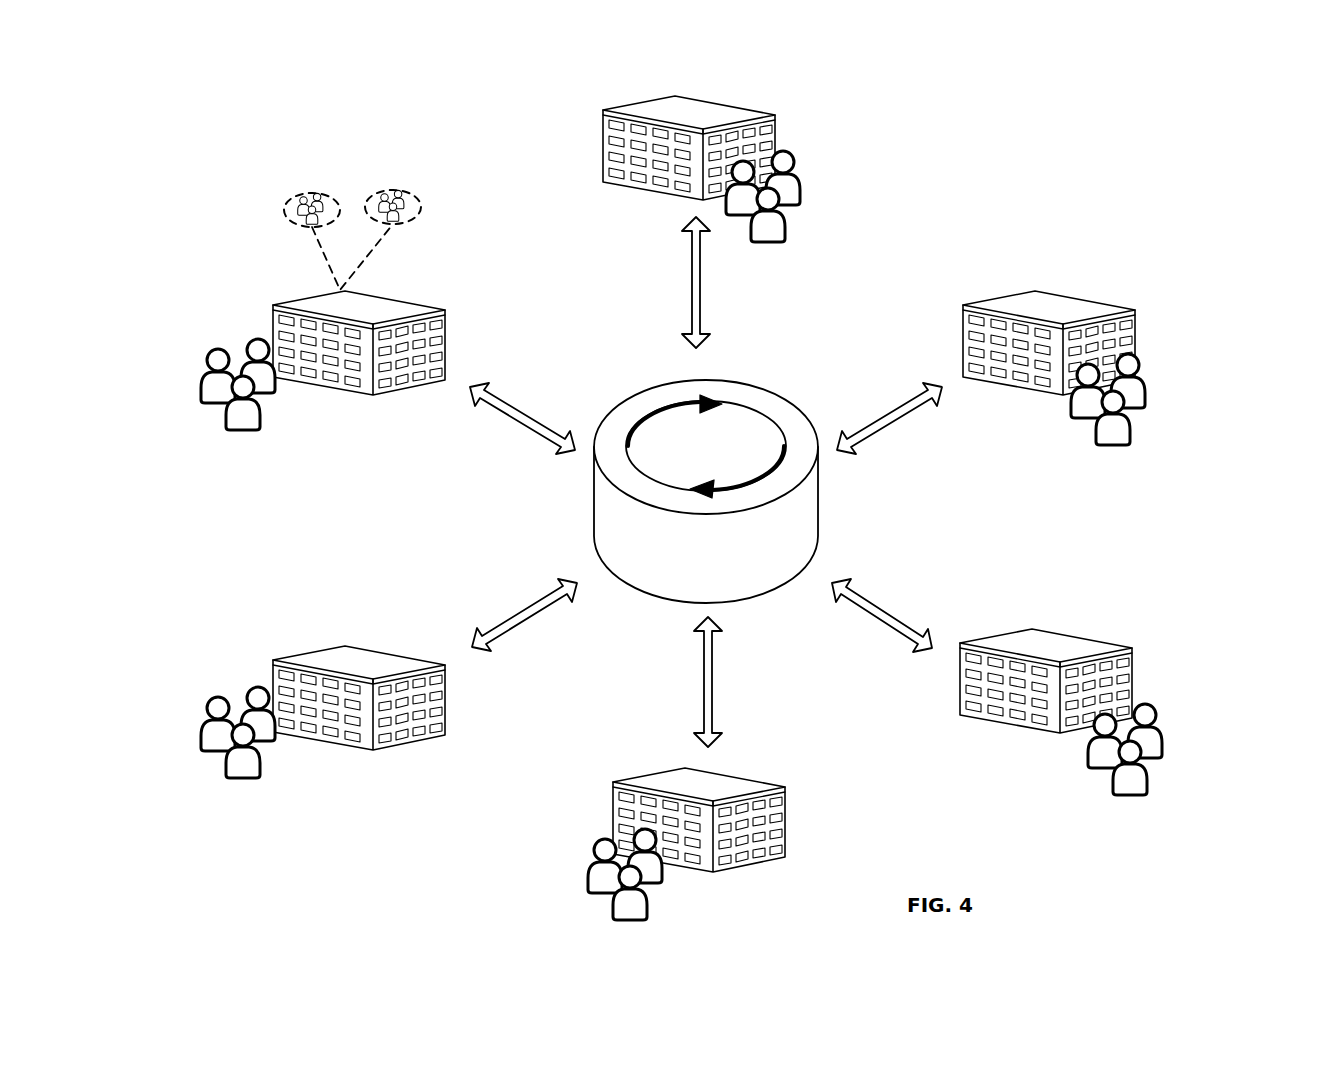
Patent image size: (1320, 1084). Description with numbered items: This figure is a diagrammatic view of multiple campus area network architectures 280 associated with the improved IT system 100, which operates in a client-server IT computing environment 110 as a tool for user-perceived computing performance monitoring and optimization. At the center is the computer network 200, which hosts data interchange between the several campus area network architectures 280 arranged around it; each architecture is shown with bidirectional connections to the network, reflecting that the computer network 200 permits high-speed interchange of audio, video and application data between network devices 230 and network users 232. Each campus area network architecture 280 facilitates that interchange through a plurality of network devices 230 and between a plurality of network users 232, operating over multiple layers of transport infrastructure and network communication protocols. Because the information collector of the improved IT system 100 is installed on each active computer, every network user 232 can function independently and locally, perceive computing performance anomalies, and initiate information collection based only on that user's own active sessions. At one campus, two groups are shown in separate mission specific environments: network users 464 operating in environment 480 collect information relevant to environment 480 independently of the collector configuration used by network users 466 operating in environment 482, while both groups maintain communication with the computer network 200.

The improved IT system 100 is at (320, 133).
The client-server IT computing environment 110 is at (978, 181).
The computer network 200 is at (1118, 183).
The network devices 230 is at (917, 503).
The network user 232 is at (296, 442).
The campus area network architecture 280 is at (465, 292).
The network users 464 is at (328, 205).
The network users 466 is at (408, 195).
The environment 480 is at (267, 207).
The environment 482 is at (433, 203).